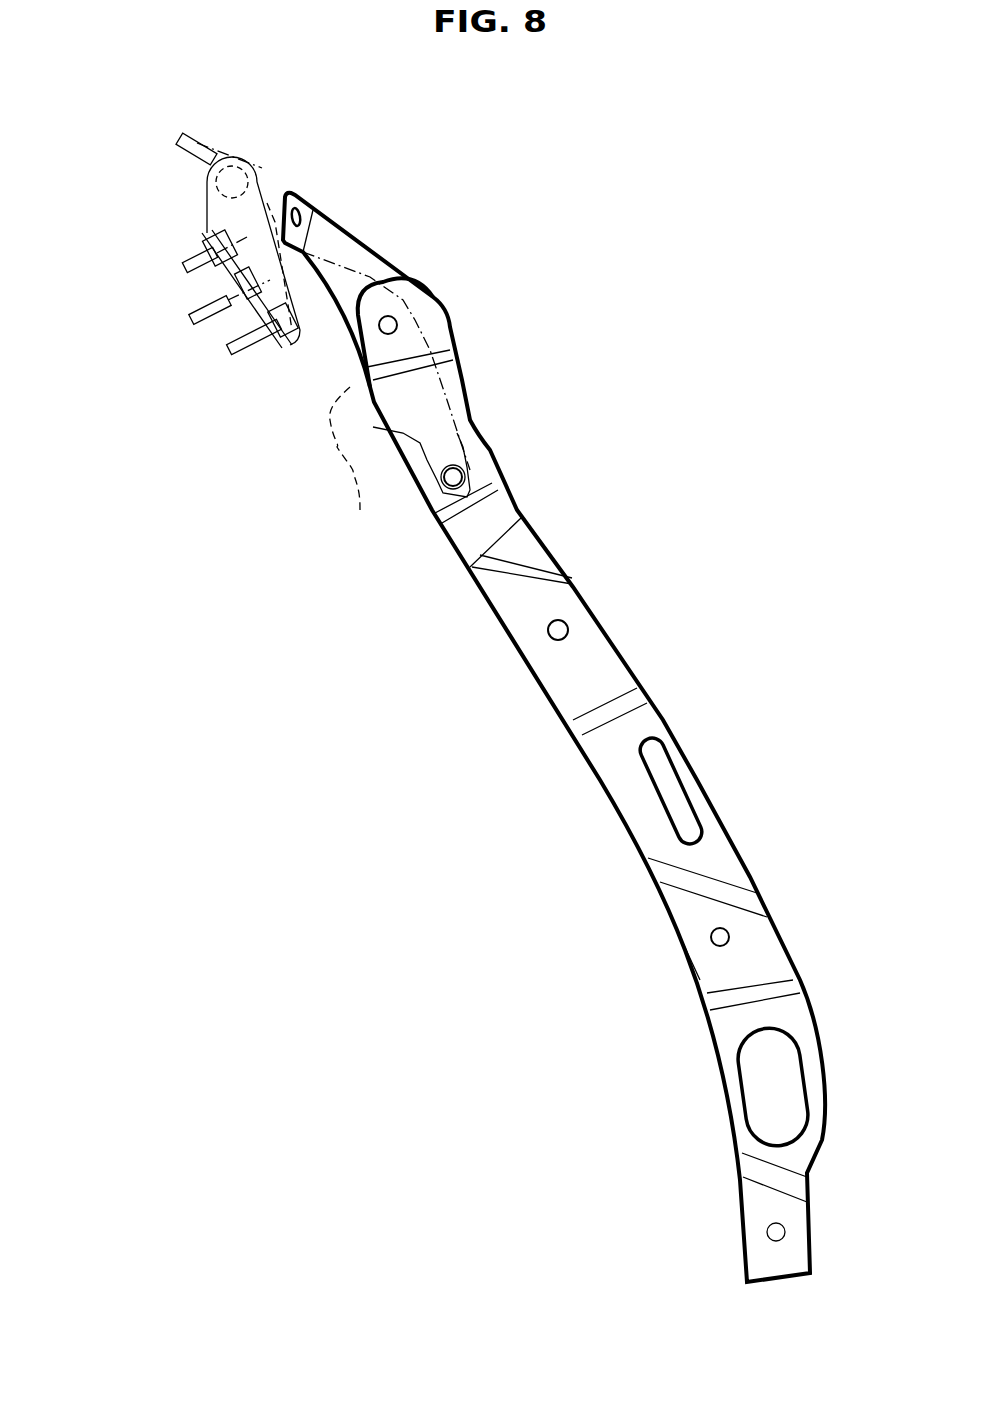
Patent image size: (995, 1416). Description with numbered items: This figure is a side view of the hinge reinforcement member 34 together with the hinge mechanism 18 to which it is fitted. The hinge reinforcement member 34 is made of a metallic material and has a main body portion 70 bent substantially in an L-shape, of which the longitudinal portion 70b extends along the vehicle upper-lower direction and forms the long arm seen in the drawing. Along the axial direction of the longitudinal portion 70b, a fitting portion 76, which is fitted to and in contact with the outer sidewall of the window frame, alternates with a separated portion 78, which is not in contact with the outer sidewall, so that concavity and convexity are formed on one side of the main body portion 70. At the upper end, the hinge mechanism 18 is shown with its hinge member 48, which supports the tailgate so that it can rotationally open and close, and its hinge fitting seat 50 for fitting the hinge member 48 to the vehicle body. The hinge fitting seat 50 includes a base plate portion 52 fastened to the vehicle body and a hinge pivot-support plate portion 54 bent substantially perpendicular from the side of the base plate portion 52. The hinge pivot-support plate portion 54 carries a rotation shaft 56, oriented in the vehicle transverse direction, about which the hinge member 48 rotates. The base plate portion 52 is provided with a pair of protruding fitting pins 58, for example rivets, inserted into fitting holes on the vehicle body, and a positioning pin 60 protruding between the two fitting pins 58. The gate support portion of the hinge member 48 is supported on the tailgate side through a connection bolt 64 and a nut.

The hinge mechanism 18 is at (357, 266).
The hinge reinforcement member 34 is at (627, 628).
The hinge member 48 is at (349, 462).
The hinge fitting seat 50 is at (267, 203).
The base plate portion 52 is at (292, 350).
The hinge pivot-support plate portion 54 is at (207, 208).
The rotation shaft 56 is at (250, 166).
The fitting pin 58 is at (183, 268).
The positioning pin 60 is at (192, 320).
The connection bolt 64 is at (400, 320).
The main body portion 70 is at (623, 823).
The longitudinal portion 70b is at (670, 918).
The fitting portion 76 is at (540, 642).
The separated portion 78 is at (698, 793).